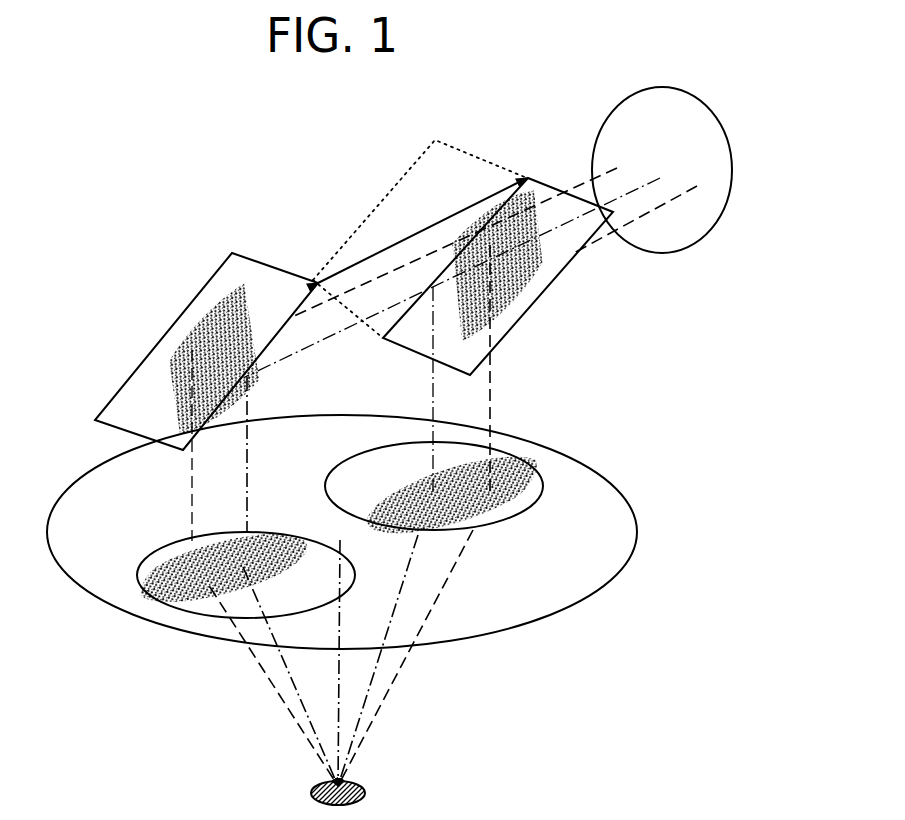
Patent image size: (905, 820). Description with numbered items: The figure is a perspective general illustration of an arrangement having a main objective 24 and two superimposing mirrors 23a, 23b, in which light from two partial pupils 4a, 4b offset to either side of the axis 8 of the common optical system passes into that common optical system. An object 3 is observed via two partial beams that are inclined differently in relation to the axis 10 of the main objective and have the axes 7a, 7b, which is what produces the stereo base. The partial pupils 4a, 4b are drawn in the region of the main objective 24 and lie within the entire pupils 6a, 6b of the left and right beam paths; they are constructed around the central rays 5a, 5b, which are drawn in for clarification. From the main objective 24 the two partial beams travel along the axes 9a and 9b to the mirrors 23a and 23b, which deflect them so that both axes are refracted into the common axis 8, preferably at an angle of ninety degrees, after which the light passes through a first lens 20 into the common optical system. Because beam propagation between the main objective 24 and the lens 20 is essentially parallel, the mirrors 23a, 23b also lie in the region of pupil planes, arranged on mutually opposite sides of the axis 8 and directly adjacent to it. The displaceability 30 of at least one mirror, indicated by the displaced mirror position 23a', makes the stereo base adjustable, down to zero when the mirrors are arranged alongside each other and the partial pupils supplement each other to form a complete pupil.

The object 3 is at (353, 782).
The first partial pupil 4a is at (140, 568).
The second partial pupil 4b is at (517, 515).
The first central ray 5a is at (588, 180).
The second central ray 5b is at (617, 232).
The entire pupil of the left beam path 6a is at (220, 597).
The entire pupil of the right beam path 6b is at (451, 489).
The first partial beam axis 7a is at (290, 678).
The second partial beam axis 7b is at (363, 718).
The axis of the common optical system 8 is at (566, 258).
The first partial beam axis after main objective 9a is at (248, 505).
The second partial beam axis after main objective 9b is at (488, 386).
The axis of the main objective 10 is at (343, 543).
The first lens 20 is at (713, 224).
The first superimposing mirror 23a is at (200, 352).
The displaced position of first mirror 23a' is at (414, 239).
The second superimposing mirror 23b is at (498, 232).
The main objective 24 is at (618, 488).
The displaceability of the mirror 30 is at (390, 246).